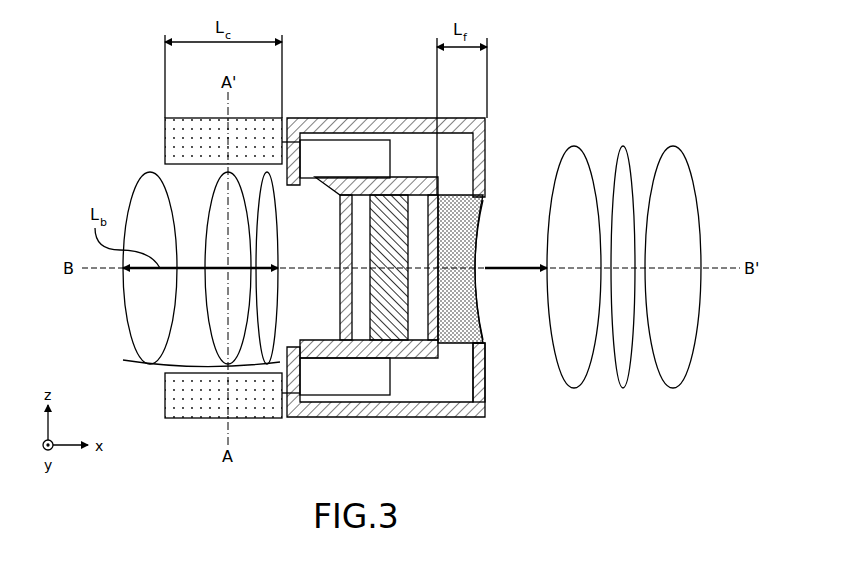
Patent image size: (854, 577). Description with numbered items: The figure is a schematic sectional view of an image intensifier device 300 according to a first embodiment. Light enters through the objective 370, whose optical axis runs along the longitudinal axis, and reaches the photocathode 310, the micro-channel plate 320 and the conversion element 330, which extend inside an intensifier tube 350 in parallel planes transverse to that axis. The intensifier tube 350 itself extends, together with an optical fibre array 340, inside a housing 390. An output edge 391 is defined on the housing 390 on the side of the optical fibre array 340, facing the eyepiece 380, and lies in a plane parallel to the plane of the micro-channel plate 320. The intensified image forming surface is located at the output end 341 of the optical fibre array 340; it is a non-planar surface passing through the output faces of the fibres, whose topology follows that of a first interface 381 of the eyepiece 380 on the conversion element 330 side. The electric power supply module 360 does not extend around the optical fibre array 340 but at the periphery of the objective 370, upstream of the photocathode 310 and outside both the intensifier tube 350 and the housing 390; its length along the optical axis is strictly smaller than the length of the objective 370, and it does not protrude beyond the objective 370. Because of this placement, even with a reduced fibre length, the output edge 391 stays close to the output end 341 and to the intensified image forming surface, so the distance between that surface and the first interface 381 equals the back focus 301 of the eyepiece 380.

The image intensifier device 300 is at (95, 142).
The back focus 301 is at (500, 272).
The photocathode 310 is at (343, 292).
The micro-channel plate 320 is at (398, 207).
The conversion element 330 is at (447, 195).
The optical fibre array 340 is at (455, 330).
The output end 341 is at (487, 325).
The intensifier tube 350 is at (348, 373).
The electric power supply module 360 is at (185, 122).
The objective 370 is at (205, 375).
The eyepiece 380 is at (702, 132).
The first interface 381 is at (548, 210).
The housing 390 is at (415, 408).
The output edge 391 is at (485, 362).